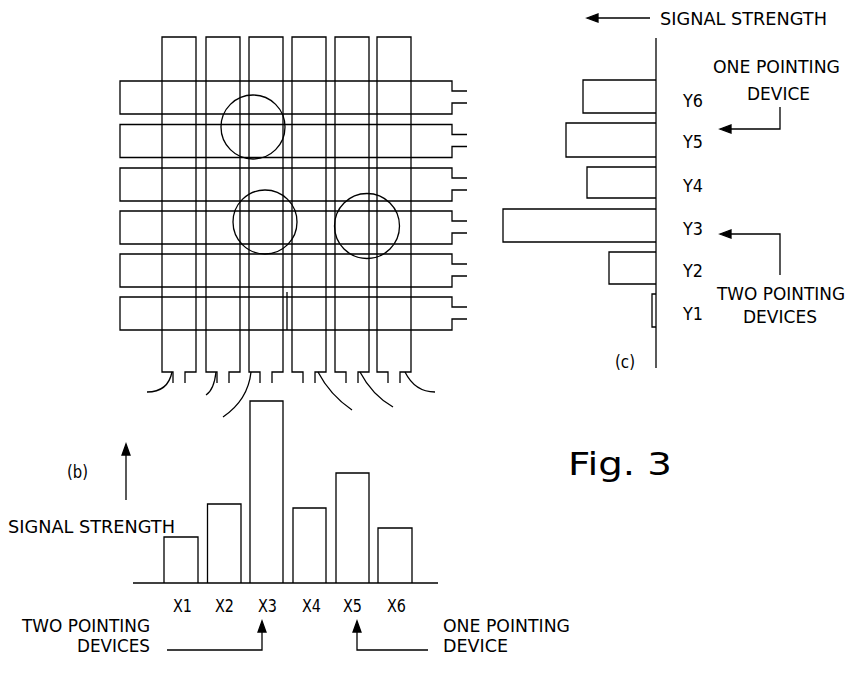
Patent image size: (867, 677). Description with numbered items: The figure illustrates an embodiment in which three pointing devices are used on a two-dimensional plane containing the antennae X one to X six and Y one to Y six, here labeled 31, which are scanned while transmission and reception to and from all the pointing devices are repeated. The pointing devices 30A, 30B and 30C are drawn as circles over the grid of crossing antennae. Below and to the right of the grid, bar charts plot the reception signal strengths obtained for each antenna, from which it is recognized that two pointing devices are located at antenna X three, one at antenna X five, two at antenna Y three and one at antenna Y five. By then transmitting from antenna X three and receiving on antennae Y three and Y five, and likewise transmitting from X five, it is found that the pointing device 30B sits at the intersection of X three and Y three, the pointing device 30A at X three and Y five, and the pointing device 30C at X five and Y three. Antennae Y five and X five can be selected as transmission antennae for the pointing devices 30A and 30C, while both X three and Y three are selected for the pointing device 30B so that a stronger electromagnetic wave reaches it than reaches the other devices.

The touch panel sensor electrode grid 31 is at (449, 60).
The pointing device 30A is at (210, 137).
The pointing device 30B is at (233, 223).
The pointing device 30C is at (380, 258).